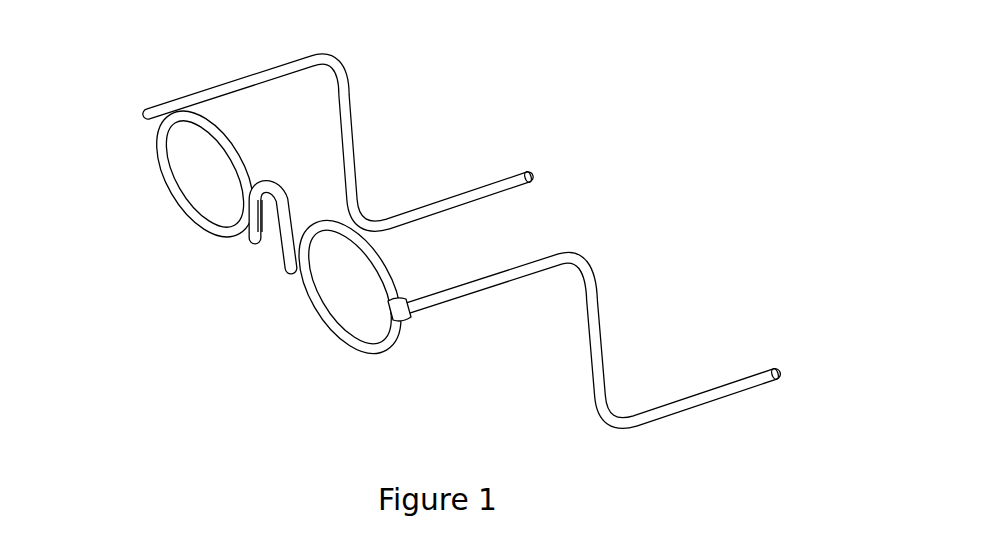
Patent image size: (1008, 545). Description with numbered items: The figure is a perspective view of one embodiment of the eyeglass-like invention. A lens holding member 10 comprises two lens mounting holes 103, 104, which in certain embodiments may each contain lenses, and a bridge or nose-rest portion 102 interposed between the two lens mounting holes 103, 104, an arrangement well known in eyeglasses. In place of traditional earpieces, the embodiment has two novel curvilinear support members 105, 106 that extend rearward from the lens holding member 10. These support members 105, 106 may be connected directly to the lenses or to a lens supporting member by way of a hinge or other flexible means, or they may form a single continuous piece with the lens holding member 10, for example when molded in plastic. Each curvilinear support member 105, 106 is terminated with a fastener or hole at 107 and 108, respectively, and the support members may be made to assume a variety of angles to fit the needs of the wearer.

The lens holding member 10 is at (464, 241).
The bridge or nose-rest portion 102 is at (277, 217).
The lens mounting hole 103 is at (212, 205).
The lens mounting hole 104 is at (350, 285).
The curvilinear support member 105 is at (352, 141).
The curvilinear support member 106 is at (599, 323).
The fastener or hole 107 is at (531, 176).
The fastener or hole 108 is at (777, 371).